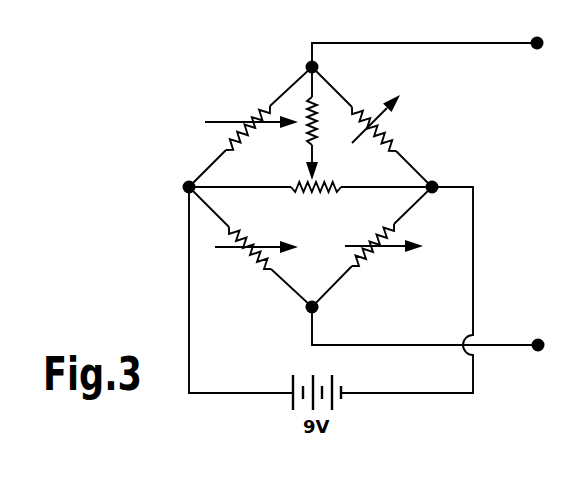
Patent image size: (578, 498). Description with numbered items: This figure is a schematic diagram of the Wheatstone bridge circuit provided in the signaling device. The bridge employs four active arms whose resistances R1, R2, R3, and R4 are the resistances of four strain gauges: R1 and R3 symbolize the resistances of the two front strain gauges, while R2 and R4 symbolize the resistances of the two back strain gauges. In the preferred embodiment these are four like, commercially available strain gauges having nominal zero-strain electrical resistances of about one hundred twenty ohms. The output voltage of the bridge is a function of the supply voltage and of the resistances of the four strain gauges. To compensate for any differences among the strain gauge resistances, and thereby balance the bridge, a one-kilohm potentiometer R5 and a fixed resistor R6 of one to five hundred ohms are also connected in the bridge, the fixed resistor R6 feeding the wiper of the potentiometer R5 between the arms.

The resistance of front strain gauge R1 is at (388, 123).
The resistance of back strain gauge R2 is at (384, 250).
The resistance of front strain gauge R3 is at (251, 125).
The resistance of back strain gauge R4 is at (256, 249).
The potentiometer R5 is at (316, 198).
The fixed resistor R6 is at (327, 123).